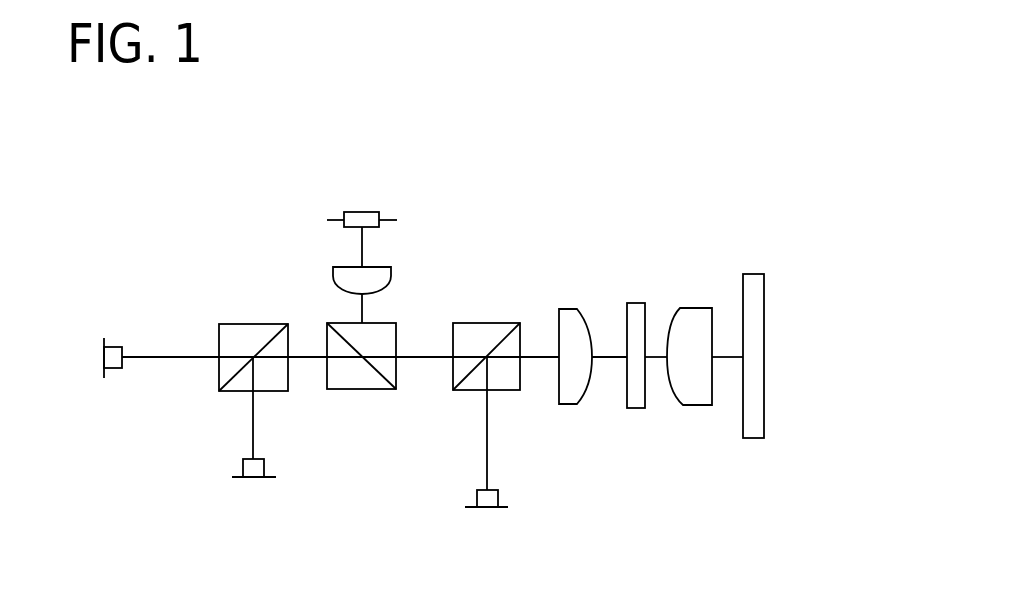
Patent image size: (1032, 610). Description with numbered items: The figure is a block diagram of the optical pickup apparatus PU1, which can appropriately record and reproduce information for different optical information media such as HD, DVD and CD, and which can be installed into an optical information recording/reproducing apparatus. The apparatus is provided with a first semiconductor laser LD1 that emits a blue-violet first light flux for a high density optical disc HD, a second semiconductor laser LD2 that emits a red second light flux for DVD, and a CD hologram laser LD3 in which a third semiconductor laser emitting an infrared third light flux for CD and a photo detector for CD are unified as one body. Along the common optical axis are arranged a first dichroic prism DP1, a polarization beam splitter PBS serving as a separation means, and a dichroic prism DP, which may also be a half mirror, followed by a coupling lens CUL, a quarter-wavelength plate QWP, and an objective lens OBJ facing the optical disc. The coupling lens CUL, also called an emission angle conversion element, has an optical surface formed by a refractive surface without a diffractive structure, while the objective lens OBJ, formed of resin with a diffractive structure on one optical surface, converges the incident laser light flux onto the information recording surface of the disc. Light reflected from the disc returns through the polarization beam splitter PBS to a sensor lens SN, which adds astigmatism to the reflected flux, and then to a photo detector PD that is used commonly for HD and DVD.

The first semiconductor laser LD1 is at (103, 333).
The second semiconductor laser LD2 is at (253, 482).
The CD hologram laser LD3 is at (487, 512).
The first dichroic prism DP1 is at (245, 323).
The dichroic prism DP is at (502, 323).
The polarization beam splitter PBS is at (360, 390).
The sensor lens SN is at (392, 272).
The photo detector PD is at (363, 212).
The coupling lens CUL is at (566, 405).
The λ/4 wavelength plate QWP is at (637, 302).
The objective lens OBJ is at (697, 406).
The optical pickup apparatus PU1 is at (727, 198).